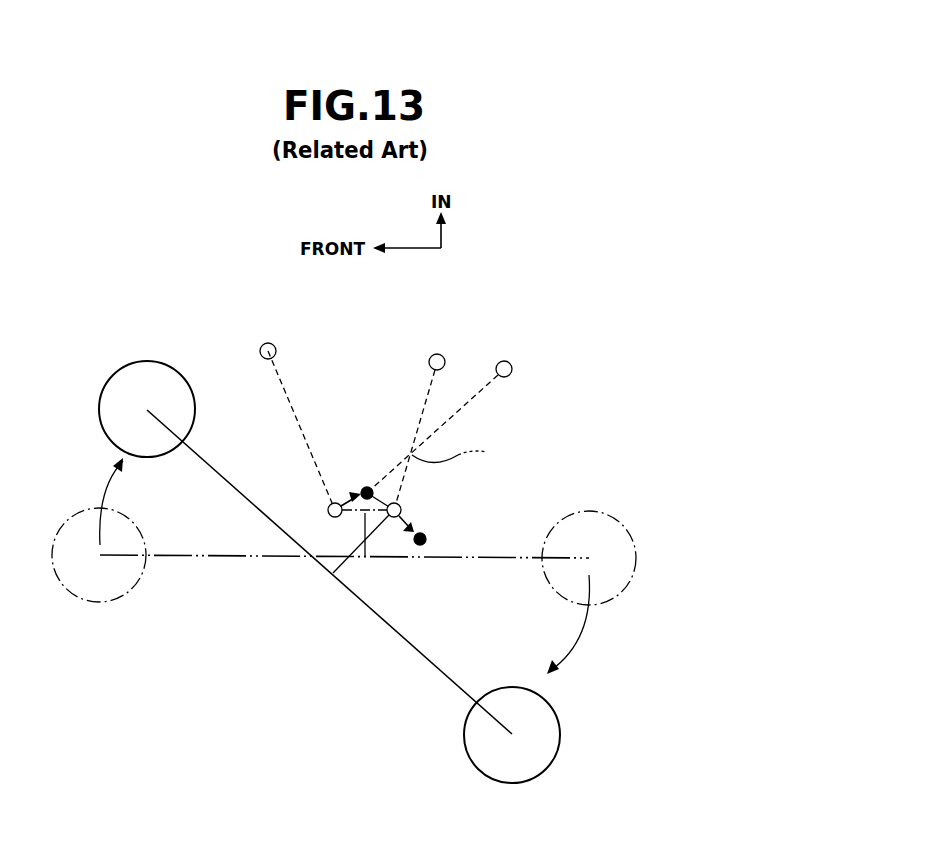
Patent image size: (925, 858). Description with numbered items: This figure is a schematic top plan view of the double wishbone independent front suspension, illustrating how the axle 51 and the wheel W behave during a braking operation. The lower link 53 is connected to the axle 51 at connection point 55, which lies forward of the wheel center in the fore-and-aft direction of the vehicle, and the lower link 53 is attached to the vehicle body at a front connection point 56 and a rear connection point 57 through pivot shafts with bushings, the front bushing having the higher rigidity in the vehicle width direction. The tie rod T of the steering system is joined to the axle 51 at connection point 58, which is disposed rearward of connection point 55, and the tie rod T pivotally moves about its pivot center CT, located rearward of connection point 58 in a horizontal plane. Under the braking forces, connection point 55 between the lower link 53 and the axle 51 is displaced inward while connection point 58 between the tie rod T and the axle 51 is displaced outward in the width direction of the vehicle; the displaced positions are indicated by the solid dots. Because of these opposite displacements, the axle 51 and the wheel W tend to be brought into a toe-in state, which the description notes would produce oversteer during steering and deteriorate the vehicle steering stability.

The axle 51 is at (399, 519).
The lower link 53 is at (297, 423).
The connection point 55 is at (327, 509).
The front connection point 56 is at (261, 345).
The rear connection point 57 is at (512, 372).
The connection point 58 is at (401, 507).
The pivot center CT is at (430, 356).
The tie rod T is at (457, 453).
The wheel W is at (597, 510).